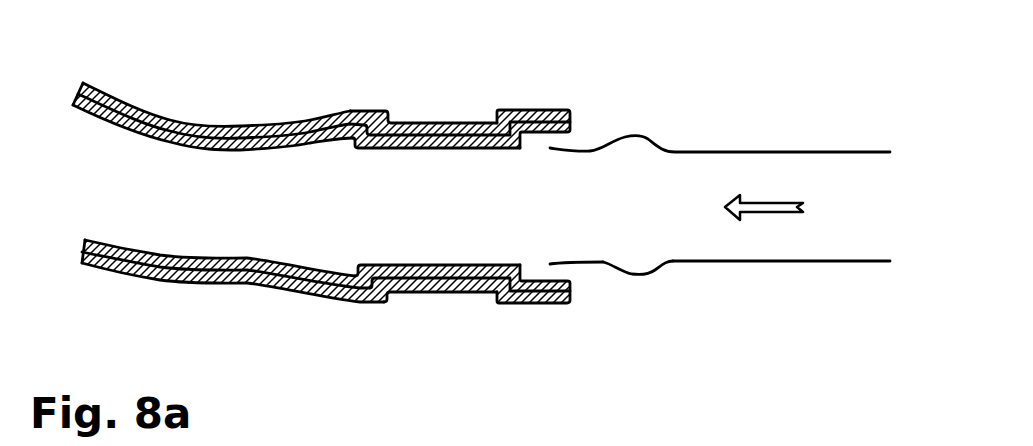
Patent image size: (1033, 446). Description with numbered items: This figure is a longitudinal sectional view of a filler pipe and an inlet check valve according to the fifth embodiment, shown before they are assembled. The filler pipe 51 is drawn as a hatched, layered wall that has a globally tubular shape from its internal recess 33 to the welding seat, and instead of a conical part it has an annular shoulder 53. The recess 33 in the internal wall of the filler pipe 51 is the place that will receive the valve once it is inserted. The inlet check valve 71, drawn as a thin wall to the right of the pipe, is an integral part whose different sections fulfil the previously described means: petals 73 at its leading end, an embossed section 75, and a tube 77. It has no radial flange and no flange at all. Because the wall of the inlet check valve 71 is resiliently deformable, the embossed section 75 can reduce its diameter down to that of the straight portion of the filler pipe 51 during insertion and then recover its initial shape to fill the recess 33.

The recess 33 is at (346, 143).
The filler pipe 51 is at (410, 103).
The annular shoulder 53 is at (527, 108).
The inlet check valve 71 is at (663, 135).
The petals 73 is at (577, 264).
The embossed section 75 is at (640, 274).
The tube 77 is at (762, 262).